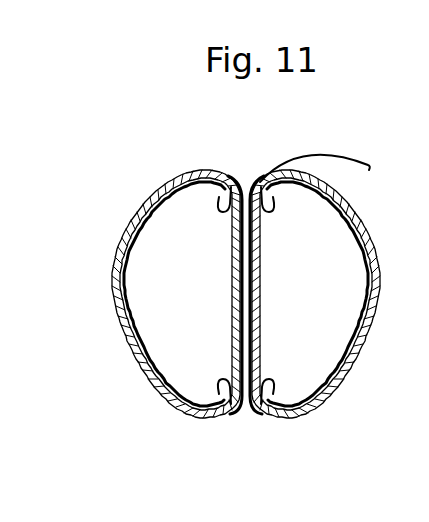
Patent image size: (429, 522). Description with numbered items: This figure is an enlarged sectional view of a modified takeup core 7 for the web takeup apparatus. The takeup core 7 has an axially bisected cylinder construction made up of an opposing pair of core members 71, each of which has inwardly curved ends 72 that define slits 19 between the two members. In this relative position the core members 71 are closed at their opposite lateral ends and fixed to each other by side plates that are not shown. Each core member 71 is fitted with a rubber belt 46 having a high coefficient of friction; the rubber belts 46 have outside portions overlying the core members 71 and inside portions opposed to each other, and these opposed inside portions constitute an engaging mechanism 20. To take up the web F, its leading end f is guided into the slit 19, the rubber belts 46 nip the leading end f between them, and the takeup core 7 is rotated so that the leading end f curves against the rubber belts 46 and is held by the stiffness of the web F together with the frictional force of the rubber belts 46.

The takeup core 7 is at (97, 201).
The core members 71 is at (124, 278).
The inwardly curved ends 72 is at (221, 196).
The rubber belts 46 is at (240, 272).
The slits 19 is at (245, 185).
The engaging mechanism 20 is at (181, 317).
The web F is at (362, 160).
The leading end of web f is at (247, 188).